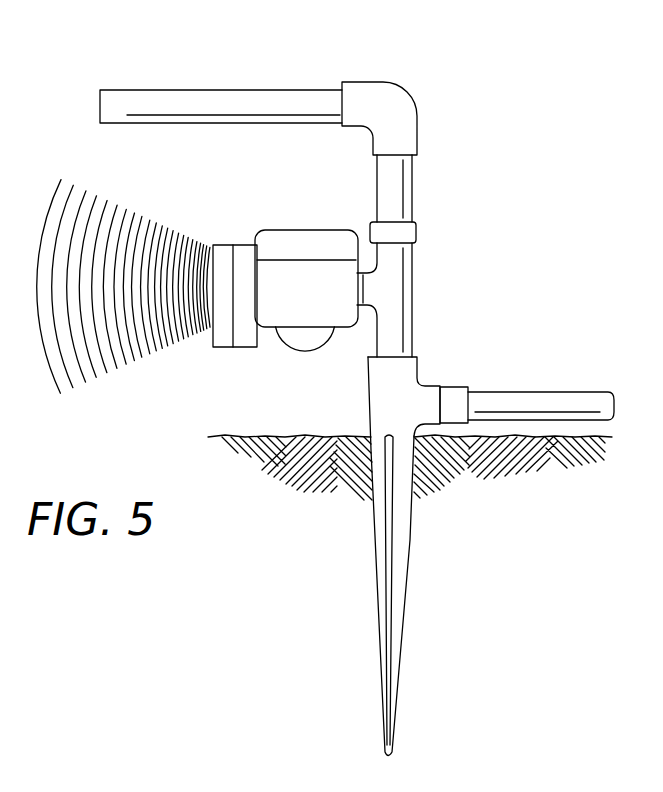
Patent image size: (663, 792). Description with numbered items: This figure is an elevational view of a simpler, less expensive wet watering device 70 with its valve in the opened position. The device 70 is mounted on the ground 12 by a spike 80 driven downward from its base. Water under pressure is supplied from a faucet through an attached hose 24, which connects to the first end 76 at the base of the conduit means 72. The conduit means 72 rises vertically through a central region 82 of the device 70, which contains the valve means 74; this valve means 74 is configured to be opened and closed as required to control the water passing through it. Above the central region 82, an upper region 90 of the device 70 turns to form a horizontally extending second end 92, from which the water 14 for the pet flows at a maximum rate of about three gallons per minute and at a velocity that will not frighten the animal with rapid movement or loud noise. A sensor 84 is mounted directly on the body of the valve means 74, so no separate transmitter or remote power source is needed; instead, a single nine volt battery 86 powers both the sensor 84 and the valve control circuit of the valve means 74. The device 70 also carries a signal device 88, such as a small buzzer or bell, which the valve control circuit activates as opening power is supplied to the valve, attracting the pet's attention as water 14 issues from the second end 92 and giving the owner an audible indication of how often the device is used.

The ground 12 is at (283, 435).
The water 14 is at (23, 145).
The hose 24 is at (571, 392).
The wet watering device 70 is at (533, 133).
The conduit means 72 is at (443, 240).
The valve means 74 is at (278, 312).
The first end 76 is at (420, 378).
The spike 80 is at (410, 548).
The central region 82 is at (412, 278).
The sensor 84 is at (212, 246).
The nine volt battery 86 is at (312, 237).
The signal device 88 is at (310, 343).
The upper region 90 is at (318, 72).
The second end 92 is at (177, 97).